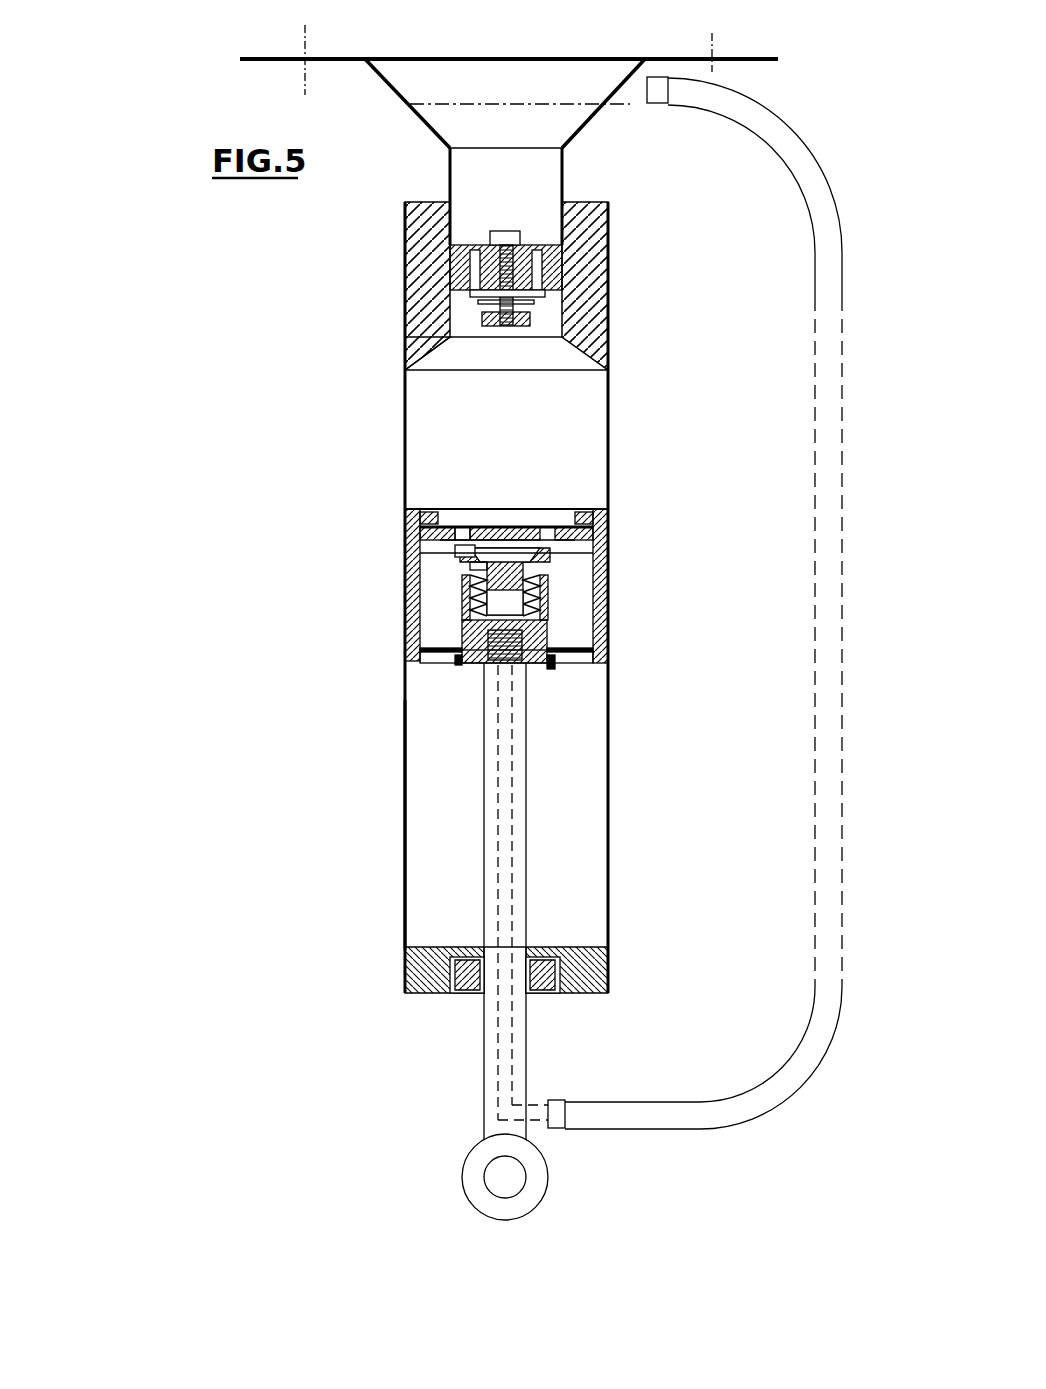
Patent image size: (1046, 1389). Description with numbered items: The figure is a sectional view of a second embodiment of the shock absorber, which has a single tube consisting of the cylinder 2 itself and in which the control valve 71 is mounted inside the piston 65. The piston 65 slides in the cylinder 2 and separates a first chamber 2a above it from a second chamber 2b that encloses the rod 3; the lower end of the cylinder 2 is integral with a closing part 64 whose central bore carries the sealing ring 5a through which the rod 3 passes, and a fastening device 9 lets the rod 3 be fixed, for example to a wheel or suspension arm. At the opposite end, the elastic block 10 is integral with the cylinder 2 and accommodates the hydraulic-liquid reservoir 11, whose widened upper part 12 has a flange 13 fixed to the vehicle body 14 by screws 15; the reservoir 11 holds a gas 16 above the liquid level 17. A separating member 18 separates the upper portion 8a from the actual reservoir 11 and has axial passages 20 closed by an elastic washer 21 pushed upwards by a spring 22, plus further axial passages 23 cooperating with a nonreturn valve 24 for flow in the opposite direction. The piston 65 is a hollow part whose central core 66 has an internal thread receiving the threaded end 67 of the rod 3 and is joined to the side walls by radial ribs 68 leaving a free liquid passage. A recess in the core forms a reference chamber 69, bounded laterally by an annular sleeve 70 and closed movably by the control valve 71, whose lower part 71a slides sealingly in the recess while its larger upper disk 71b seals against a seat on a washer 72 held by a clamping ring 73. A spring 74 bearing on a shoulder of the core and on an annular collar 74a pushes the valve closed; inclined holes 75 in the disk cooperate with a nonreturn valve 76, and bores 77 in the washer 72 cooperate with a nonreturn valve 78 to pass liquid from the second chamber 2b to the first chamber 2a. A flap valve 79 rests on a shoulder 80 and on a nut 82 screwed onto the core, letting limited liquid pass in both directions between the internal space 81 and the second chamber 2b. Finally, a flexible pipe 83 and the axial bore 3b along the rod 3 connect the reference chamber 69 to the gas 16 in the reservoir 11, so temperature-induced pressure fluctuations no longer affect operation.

The cylinder 2 is at (403, 800).
The first chamber 2a is at (438, 392).
The second chamber 2b is at (428, 823).
The rod 3 is at (490, 838).
The axial bore 3b is at (503, 868).
The sealing ring 5a is at (450, 978).
The upper portion of the casing 8a is at (455, 352).
The fastening device 9 is at (470, 1168).
The elastic block 10 is at (427, 237).
The hydraulic-liquid reservoir 11 is at (567, 176).
The upper part of the reservoir 12 is at (399, 96).
The flange 13 is at (360, 61).
The body 14 is at (407, 57).
The screws 15 is at (712, 35).
The gas 16 is at (605, 72).
The liquid level 17 is at (562, 100).
The separating member 18 is at (455, 265).
The axial passages 20 is at (453, 287).
The elastic washer 21 is at (548, 296).
The spring 22 is at (540, 322).
The axial passages 23 is at (545, 257).
The nonreturn valve 24 is at (560, 240).
The closing part 64 is at (590, 975).
The piston 65 is at (592, 593).
The central core 66 is at (575, 640).
The threaded end 67 is at (540, 700).
The radial ribs 68 is at (440, 627).
The reference chamber 69 is at (560, 600).
The annular sleeve 70 is at (560, 620).
The control valve 71 is at (497, 560).
The lower part 71a is at (520, 557).
The upper disk 71b is at (472, 555).
The washer 72 is at (410, 532).
The clamping ring 73 is at (428, 513).
The spring 74 is at (445, 598).
The annular collar 74a is at (478, 568).
The holes 75 is at (572, 553).
The nonreturn valve 76 is at (560, 565).
The bores 77 is at (452, 527).
The nonreturn valve 78 is at (462, 527).
The flap valve 79 is at (437, 663).
The shoulder 80 is at (420, 652).
The internal space 81 is at (468, 615).
The nut 82 is at (460, 655).
The flexible pipe 83 is at (830, 240).